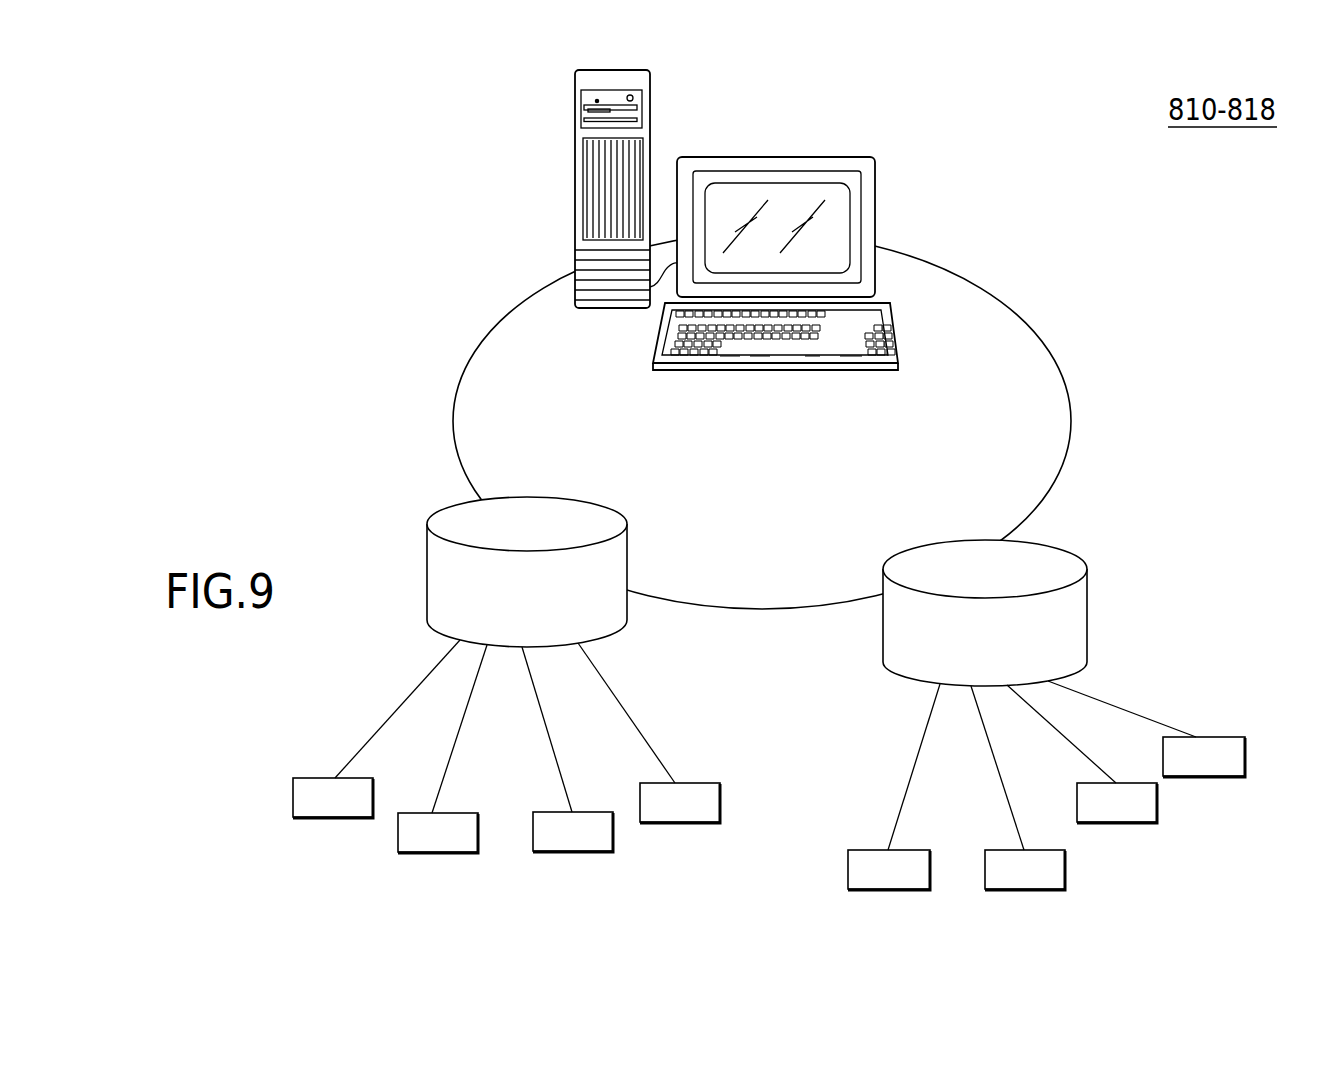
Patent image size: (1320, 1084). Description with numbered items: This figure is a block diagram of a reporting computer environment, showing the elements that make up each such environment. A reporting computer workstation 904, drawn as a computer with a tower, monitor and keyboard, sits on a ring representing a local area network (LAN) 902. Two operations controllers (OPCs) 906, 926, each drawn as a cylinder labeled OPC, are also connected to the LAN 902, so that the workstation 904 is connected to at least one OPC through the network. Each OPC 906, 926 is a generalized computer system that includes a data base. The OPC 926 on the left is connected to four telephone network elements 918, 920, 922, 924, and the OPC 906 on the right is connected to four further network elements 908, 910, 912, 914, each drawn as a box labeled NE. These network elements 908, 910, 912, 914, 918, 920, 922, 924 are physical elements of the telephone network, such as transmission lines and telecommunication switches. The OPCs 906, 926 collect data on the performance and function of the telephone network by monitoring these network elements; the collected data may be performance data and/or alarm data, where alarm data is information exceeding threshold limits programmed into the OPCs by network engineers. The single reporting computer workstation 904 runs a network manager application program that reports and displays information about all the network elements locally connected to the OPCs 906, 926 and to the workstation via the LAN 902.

The local area network 902 is at (925, 262).
The reporting computer workstation 904 is at (813, 157).
The operations controller 906 is at (1043, 541).
The telephone network element 908 is at (888, 892).
The telephone network element 910 is at (1024, 892).
The telephone network element 912 is at (1116, 825).
The telephone network element 914 is at (1196, 779).
The telephone network element 918 is at (338, 820).
The telephone network element 920 is at (445, 855).
The telephone network element 922 is at (580, 855).
The telephone network element 924 is at (688, 825).
The operations controller 926 is at (449, 511).